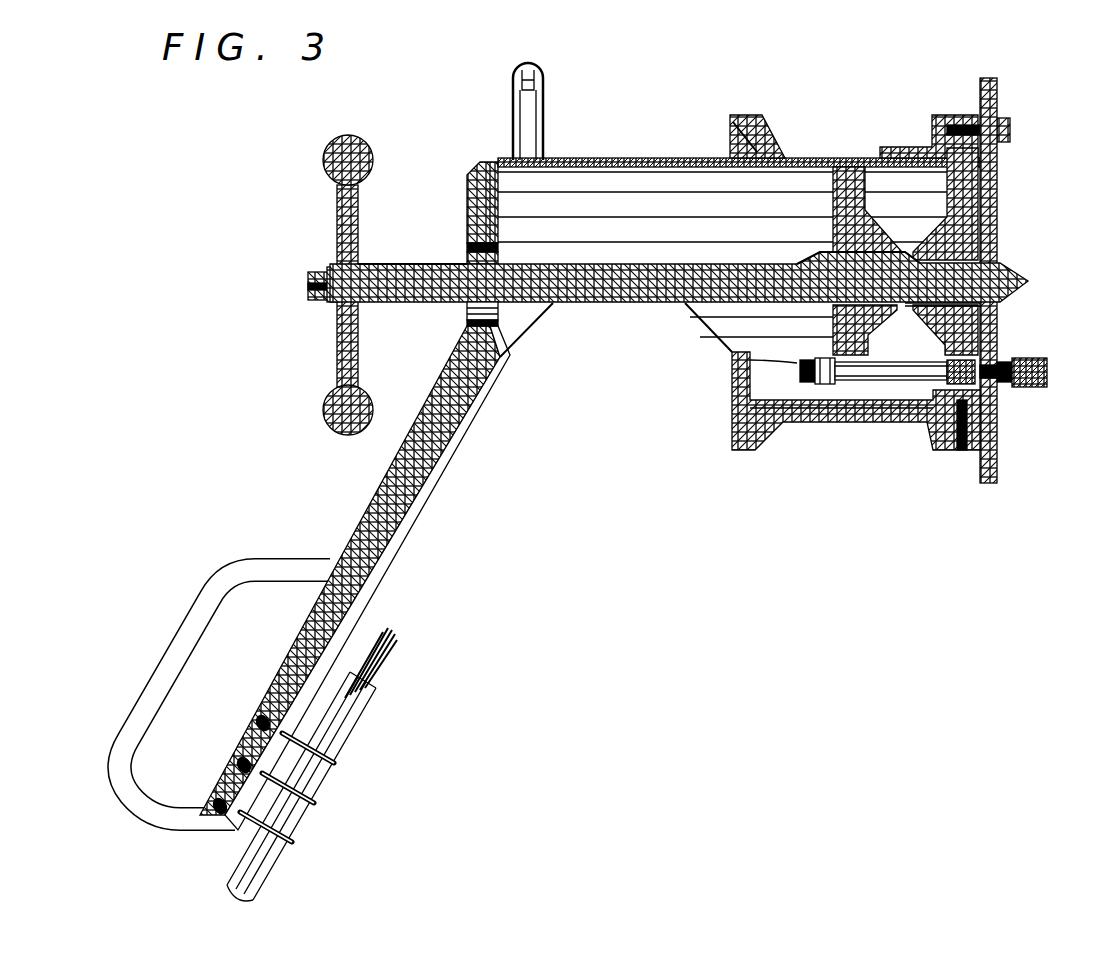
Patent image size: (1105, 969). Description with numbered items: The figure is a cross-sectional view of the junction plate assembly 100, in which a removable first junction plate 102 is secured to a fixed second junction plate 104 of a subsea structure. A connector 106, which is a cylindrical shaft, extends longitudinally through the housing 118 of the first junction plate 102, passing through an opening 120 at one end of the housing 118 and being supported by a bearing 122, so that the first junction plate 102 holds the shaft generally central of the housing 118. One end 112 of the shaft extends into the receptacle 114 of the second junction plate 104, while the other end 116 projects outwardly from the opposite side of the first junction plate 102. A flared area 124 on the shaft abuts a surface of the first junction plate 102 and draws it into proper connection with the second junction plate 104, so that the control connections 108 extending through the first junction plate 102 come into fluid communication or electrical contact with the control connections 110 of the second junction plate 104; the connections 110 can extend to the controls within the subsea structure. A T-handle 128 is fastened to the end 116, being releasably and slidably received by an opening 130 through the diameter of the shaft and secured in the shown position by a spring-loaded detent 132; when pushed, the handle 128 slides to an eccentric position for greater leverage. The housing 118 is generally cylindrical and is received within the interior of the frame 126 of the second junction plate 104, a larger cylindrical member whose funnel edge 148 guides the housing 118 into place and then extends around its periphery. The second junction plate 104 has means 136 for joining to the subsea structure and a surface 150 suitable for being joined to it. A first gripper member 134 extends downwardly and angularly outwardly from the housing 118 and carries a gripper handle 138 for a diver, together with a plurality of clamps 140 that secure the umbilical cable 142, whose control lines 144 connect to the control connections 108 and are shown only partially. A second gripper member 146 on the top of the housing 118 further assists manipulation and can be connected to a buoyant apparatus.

The junction plate assembly 100 is at (900, 55).
The first junction plate 102 is at (852, 180).
The second junction plate 104 is at (967, 208).
The connector 106 is at (672, 303).
The control connections 108 is at (732, 380).
The control connections 110 is at (1007, 358).
The end 112 is at (1008, 267).
The receptacle 114 is at (983, 308).
The end 116 is at (385, 263).
The housing 118 is at (672, 160).
The opening 120 is at (465, 310).
The bearing 122 is at (836, 258).
The flared area 124 is at (833, 308).
The frame 126 is at (880, 155).
The handle 128 is at (337, 235).
The opening 130 is at (337, 305).
The spring-loaded detent 132 is at (308, 296).
The first gripper member 134 is at (435, 460).
The means for joining 136 is at (1012, 128).
The gripper handle 138 is at (215, 575).
The clamps 140 is at (287, 842).
The umbilical cable 142 is at (340, 720).
The control lines 144 is at (395, 632).
The second gripper member 146 is at (548, 92).
The funnel edge 148 is at (737, 115).
The surface 150 is at (997, 462).